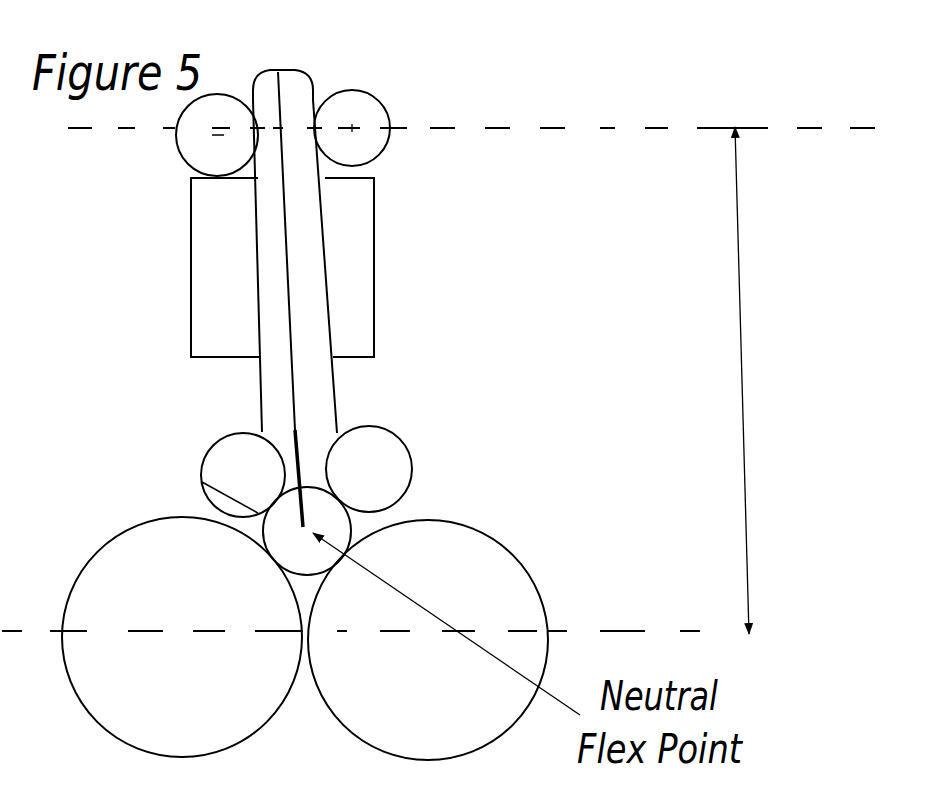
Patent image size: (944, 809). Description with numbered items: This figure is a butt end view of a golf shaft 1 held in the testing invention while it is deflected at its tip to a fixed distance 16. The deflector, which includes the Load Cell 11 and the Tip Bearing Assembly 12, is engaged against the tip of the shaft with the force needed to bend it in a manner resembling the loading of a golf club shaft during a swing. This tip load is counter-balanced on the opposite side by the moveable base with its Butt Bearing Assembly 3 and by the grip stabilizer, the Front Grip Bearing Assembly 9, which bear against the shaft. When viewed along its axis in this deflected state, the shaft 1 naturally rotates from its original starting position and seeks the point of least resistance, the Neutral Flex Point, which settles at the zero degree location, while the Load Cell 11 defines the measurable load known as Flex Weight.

The golf shaft 1 is at (280, 530).
The Butt Bearing Assembly 3 is at (515, 547).
The Front Grip Bearing Assembly 9 is at (410, 447).
The Load Cell 11 is at (378, 271).
The Tip Bearing Assembly 12 is at (377, 162).
The fixed distance 16 is at (747, 325).